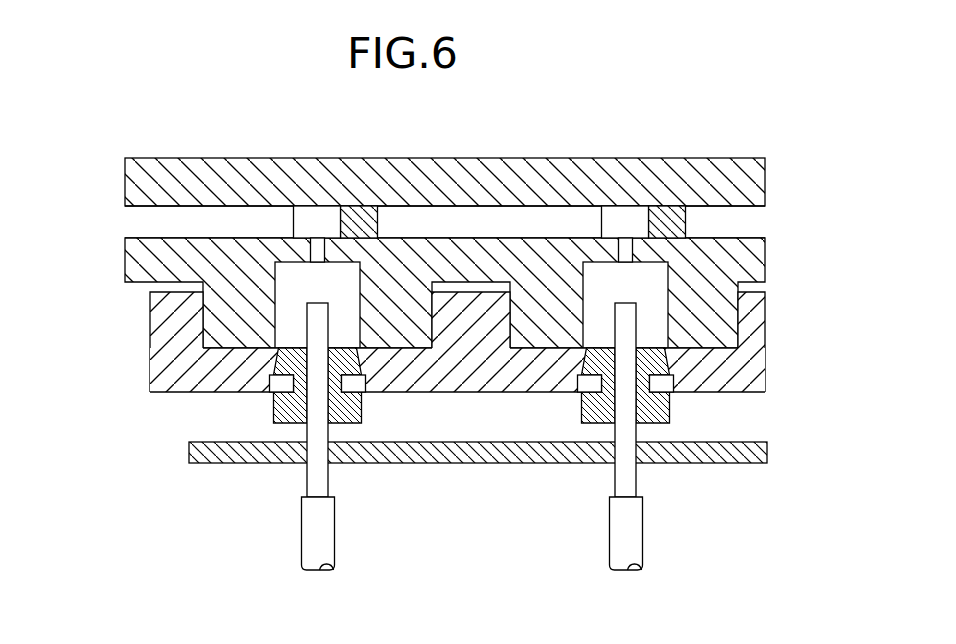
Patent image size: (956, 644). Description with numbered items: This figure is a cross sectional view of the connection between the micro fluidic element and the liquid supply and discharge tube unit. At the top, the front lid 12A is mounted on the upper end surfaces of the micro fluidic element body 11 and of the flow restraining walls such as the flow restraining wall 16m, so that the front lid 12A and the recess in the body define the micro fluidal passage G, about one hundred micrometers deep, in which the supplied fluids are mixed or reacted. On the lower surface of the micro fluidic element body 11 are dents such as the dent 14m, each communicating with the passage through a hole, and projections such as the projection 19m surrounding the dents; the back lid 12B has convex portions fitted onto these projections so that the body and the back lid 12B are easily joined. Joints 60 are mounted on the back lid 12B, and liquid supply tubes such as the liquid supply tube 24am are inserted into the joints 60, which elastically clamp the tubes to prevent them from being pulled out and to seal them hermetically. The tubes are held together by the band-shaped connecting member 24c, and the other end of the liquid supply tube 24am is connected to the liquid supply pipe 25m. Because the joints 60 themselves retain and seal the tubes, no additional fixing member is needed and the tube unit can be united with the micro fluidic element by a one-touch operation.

The front lid 12A is at (222, 158).
The micro fluidal passage G is at (135, 222).
The micro fluidic element body 11 is at (502, 238).
The dent 14m is at (353, 292).
The flow restraining wall 16m is at (376, 222).
The back lid 12B is at (150, 351).
The projection 19m is at (232, 352).
The joint 60 is at (670, 406).
The connecting member 24c is at (698, 463).
The liquid supply tube 24am is at (307, 483).
The liquid supply pipe 25m is at (336, 524).